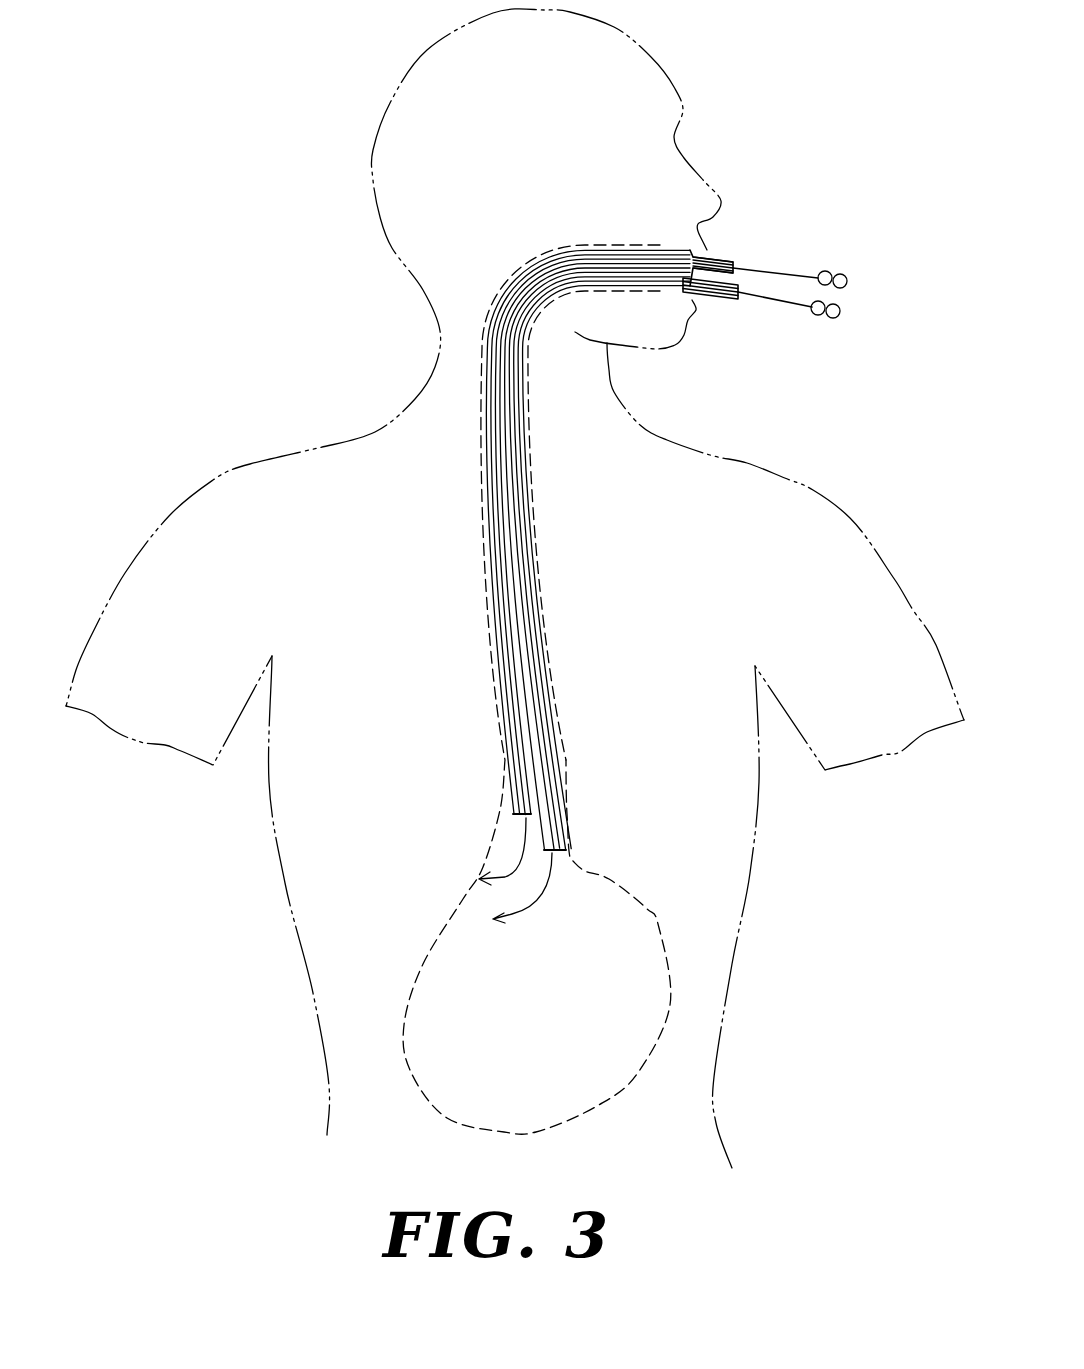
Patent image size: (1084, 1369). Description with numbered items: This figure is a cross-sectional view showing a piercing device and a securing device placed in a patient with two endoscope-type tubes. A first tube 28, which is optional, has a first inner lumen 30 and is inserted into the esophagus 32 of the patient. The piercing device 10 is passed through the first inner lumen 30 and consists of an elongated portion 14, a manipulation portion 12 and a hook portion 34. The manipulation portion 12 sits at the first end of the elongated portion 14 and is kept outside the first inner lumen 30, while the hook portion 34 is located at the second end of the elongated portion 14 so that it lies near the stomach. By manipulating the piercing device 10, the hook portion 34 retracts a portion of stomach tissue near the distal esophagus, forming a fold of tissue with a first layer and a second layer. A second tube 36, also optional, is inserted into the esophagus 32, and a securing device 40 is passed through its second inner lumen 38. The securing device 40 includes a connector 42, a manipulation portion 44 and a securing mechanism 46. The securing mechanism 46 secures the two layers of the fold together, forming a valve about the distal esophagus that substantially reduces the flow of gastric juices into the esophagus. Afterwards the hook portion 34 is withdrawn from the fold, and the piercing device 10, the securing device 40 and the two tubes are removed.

The piercing device 10 is at (795, 245).
The manipulation portion 12 is at (843, 273).
The elongated portion 14 is at (490, 448).
The first tube 28 is at (736, 262).
The first inner lumen 30 is at (737, 272).
The esophagus 32 is at (530, 405).
The hook portion 34 is at (481, 874).
The second tube 36 is at (738, 293).
The second inner lumen 38 is at (718, 290).
The securing device 40 is at (812, 311).
The connector 42 is at (527, 636).
The manipulation portion 44 is at (840, 306).
The securing mechanism 46 is at (498, 924).